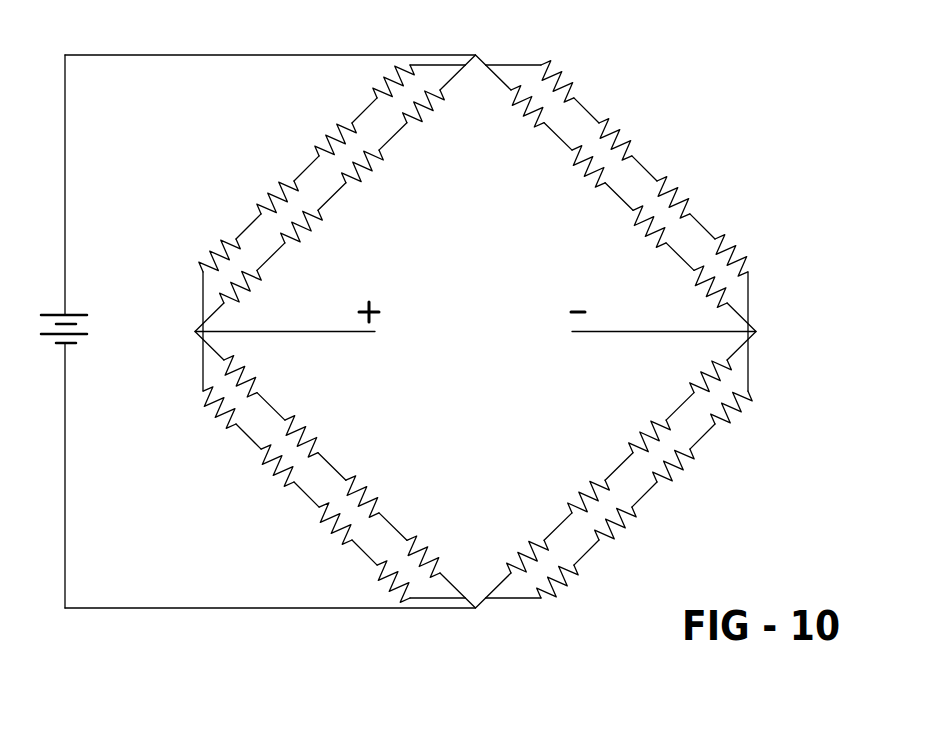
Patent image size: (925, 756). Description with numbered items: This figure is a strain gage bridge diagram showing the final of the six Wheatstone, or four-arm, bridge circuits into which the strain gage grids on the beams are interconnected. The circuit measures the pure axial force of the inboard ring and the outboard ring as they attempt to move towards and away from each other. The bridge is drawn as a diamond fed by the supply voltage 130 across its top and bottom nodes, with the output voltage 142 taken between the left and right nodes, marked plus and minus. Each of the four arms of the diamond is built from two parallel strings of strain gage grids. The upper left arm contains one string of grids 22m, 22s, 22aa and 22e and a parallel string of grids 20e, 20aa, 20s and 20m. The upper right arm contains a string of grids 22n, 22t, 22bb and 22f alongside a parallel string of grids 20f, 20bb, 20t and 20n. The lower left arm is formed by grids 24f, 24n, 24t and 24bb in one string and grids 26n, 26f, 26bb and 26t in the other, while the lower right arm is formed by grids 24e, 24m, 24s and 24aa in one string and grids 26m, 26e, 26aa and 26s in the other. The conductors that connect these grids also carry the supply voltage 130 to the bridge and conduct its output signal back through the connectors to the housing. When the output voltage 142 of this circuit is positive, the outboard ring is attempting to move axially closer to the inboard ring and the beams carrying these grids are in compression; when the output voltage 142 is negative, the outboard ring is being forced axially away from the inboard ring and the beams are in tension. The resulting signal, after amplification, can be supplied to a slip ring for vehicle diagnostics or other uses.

The supply voltage 130 is at (50, 312).
The output voltage 142 is at (458, 344).
The strain gage grid 22m is at (378, 93).
The strain gage grid 22s is at (324, 130).
The strain gage grid 22aa is at (256, 206).
The strain gage grid 22e is at (202, 272).
The strain gage grid 22n is at (567, 75).
The strain gage grid 22t is at (627, 130).
The strain gage grid 22bb is at (690, 204).
The strain gage grid 22f is at (750, 271).
The strain gage grid 20e is at (440, 107).
The strain gage grid 20aa is at (372, 177).
The strain gage grid 20s is at (318, 236).
The strain gage grid 20m is at (257, 293).
The strain gage grid 20f is at (517, 108).
The strain gage grid 20bb is at (587, 175).
The strain gage grid 20t is at (634, 234).
The strain gage grid 20n is at (697, 291).
The strain gage grid 24bb is at (411, 606).
The strain gage grid 24t is at (344, 546).
The strain gage grid 24n is at (262, 484).
The strain gage grid 24f is at (208, 426).
The strain gage grid 24aa is at (540, 606).
The strain gage grid 24s is at (607, 546).
The strain gage grid 24m is at (689, 484).
The strain gage grid 24e is at (745, 425).
The strain gage grid 26t is at (430, 552).
The strain gage grid 26bb is at (378, 488).
The strain gage grid 26f is at (318, 429).
The strain gage grid 26n is at (256, 373).
The strain gage grid 26s is at (537, 537).
The strain gage grid 26aa is at (578, 500).
The strain gage grid 26e is at (634, 429).
The strain gage grid 26m is at (725, 366).